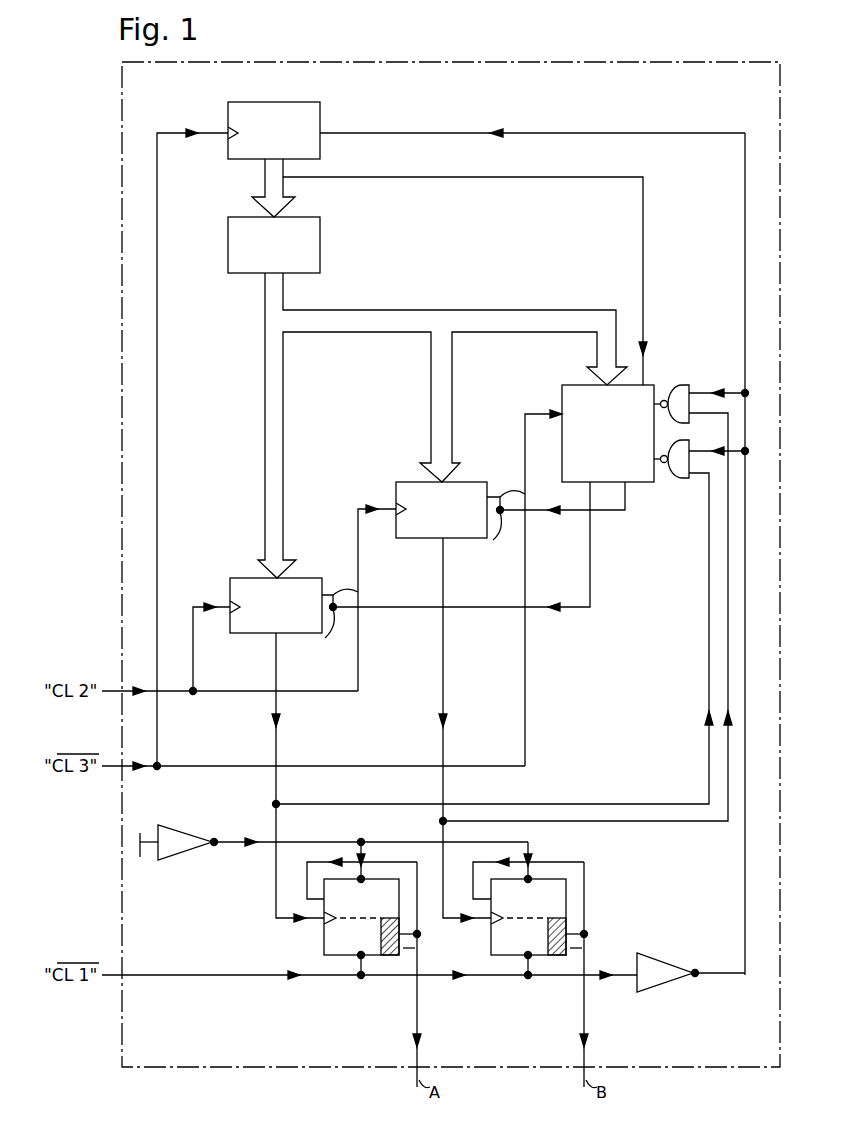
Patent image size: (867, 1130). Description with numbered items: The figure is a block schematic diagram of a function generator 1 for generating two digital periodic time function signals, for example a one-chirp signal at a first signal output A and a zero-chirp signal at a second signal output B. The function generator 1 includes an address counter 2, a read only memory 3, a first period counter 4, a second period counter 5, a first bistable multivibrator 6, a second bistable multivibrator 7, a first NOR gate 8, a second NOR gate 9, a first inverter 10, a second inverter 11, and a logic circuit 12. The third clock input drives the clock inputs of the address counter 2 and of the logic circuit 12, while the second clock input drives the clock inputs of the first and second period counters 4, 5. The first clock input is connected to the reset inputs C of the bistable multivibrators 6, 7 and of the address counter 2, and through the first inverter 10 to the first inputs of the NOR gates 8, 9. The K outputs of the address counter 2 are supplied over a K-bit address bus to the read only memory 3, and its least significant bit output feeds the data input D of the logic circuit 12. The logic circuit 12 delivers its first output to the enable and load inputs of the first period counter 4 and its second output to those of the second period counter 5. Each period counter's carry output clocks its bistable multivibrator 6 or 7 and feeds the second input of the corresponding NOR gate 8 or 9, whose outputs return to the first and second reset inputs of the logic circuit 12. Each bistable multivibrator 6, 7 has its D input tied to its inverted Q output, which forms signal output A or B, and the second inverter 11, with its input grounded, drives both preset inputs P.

The function generator 1 is at (781, 64).
The address counter 2 is at (278, 102).
The read only memory 3 is at (320, 238).
The first period counter 4 is at (303, 578).
The second period counter 5 is at (475, 482).
The first bistable multivibrator 6 is at (324, 943).
The second bistable multivibrator 7 is at (491, 943).
The first NOR gate 8 is at (683, 478).
The second NOR gate 9 is at (680, 385).
The first inverter 10 is at (668, 983).
The second inverter 11 is at (175, 834).
The logic circuit 12 is at (560, 393).